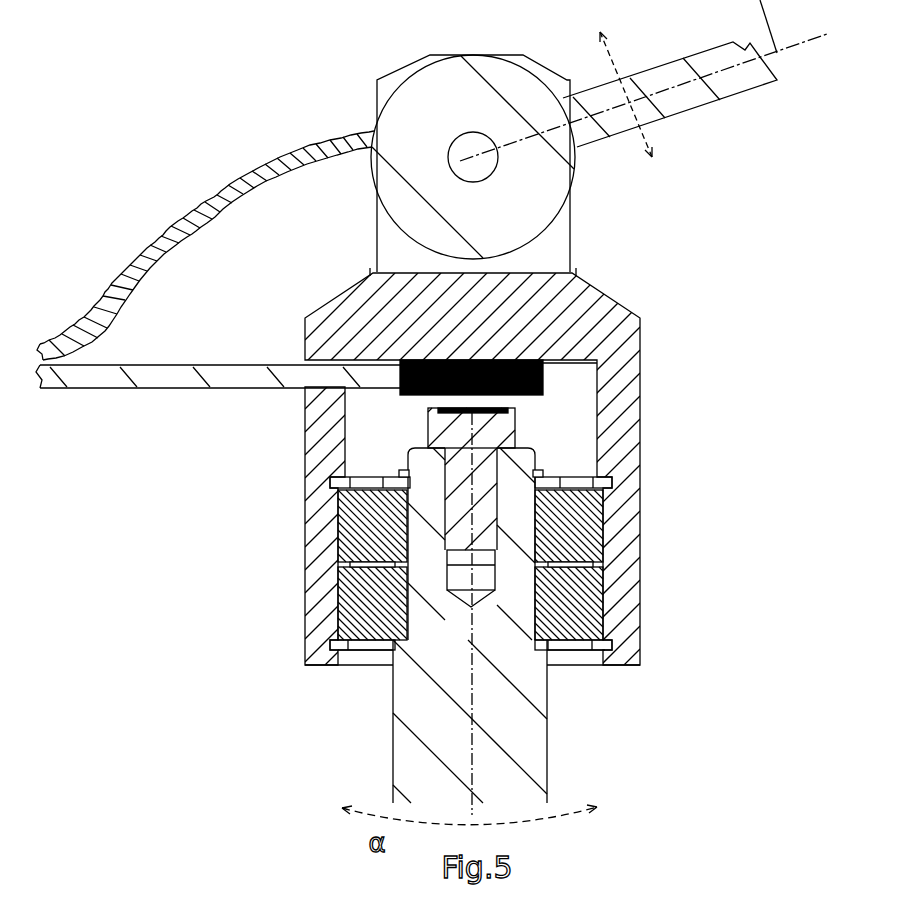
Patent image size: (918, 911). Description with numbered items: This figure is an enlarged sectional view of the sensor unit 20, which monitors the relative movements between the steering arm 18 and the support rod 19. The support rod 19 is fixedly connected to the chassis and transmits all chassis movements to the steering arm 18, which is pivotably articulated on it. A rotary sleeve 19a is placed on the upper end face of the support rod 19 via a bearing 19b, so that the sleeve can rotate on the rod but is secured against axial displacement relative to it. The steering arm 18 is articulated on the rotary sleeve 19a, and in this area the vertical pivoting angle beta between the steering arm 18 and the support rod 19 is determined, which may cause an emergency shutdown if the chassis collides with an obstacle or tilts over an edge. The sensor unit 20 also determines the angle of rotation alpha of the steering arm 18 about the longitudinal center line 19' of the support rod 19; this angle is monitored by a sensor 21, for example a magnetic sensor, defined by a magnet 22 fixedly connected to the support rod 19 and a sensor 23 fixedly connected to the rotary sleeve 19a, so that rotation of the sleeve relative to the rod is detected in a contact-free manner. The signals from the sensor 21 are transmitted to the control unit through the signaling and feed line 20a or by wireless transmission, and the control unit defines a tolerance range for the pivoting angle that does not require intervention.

The steering arm 18 is at (677, 113).
The support rod 19 is at (515, 433).
The rotary sleeve 19a is at (640, 333).
The bearing 19b is at (585, 566).
The longitudinal center line 19' is at (560, 614).
The sensor unit 20 is at (205, 108).
The signaling and feed line 20a is at (167, 227).
The sensor 21 is at (272, 388).
The magnet 22 is at (513, 415).
The sensor 23 is at (545, 388).